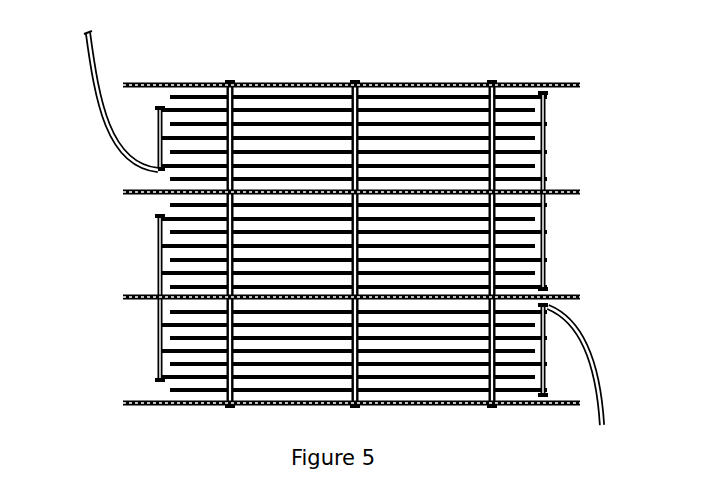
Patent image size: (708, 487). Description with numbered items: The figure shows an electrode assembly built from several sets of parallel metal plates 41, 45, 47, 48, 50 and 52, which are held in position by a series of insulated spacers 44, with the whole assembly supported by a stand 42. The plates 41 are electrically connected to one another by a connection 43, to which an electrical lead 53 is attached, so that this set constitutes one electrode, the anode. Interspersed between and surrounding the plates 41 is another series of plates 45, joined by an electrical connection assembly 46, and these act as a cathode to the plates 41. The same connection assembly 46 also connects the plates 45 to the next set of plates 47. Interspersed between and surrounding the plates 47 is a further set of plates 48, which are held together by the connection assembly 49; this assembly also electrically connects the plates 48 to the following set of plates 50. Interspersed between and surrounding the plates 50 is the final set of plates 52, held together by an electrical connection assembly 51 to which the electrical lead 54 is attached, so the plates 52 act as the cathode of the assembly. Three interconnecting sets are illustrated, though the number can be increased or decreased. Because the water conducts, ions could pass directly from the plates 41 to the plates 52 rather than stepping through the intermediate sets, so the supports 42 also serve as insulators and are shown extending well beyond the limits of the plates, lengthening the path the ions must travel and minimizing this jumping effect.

The parallel metal plates 41 is at (178, 163).
The stand 42 is at (121, 187).
The connection 43 is at (155, 160).
The insulated spacers 44 is at (240, 237).
The plates 45 is at (552, 177).
The electrical connection assembly 46 is at (552, 243).
The plates 47 is at (552, 283).
The plates 48 is at (153, 222).
The connection assembly 49 is at (155, 262).
The plates 50 is at (153, 328).
The electrical connection assembly 51 is at (552, 362).
The plates 52 is at (552, 387).
The electrical lead 53 is at (88, 57).
The electrical lead 54 is at (604, 412).